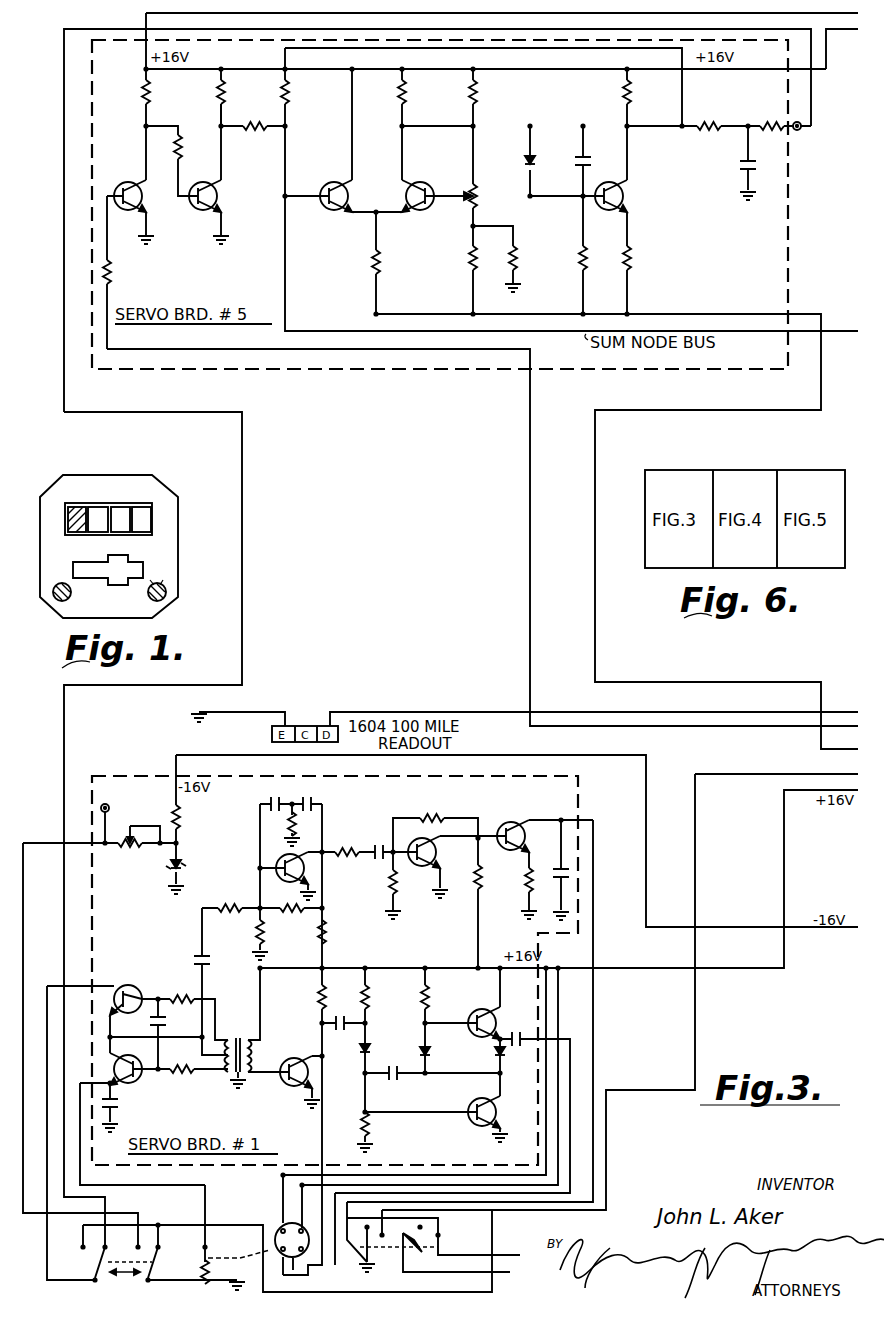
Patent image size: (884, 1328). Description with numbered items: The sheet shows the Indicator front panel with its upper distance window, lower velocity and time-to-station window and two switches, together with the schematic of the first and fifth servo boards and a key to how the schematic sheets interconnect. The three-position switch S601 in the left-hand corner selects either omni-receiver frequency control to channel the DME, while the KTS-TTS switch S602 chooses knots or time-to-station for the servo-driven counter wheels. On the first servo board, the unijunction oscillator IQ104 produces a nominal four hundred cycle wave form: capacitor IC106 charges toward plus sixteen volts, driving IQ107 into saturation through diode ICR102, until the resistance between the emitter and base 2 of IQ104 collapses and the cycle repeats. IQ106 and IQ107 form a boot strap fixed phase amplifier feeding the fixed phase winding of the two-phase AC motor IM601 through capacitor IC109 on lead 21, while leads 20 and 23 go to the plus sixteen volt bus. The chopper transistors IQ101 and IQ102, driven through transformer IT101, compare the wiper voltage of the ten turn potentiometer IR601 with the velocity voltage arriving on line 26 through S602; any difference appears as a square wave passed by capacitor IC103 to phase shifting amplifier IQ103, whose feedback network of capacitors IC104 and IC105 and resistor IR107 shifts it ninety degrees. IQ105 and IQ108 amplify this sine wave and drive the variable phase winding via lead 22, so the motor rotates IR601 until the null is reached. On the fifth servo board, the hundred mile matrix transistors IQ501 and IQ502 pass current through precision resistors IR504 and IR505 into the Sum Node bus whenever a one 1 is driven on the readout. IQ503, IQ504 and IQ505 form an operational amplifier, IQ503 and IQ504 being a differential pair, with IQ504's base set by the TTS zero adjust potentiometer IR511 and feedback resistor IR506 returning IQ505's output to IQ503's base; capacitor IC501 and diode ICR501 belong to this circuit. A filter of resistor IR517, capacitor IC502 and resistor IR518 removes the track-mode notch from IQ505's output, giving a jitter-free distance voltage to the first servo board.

In FIG. 3, the transistor IQ501 is at (118, 183).
In FIG. 3, the transistor IQ502 is at (220, 184).
In FIG. 3, the transistor IQ503 is at (331, 191).
In FIG. 3, the transistor IQ504 is at (452, 191).
In FIG. 3, the transistor IQ505 is at (622, 204).
In FIG. 3, the resistor IR504 is at (245, 97).
In FIG. 3, the resistor IR505 is at (253, 142).
In FIG. 3, the resistor IR506 is at (285, 98).
In FIG. 3, the TTS zero adjust potentiometer IR511 is at (480, 205).
In FIG. 3, the resistor IR517 is at (714, 122).
In FIG. 3, the resistor IR518 is at (772, 124).
In FIG. 3, the capacitor IC501 is at (589, 148).
In FIG. 3, the capacitor IC502 is at (742, 172).
In FIG. 3, the diode ICR501 is at (524, 162).
In FIG. 3, the chopper transistor IQ101 is at (116, 988).
In FIG. 3, the chopper transistor IQ102 is at (154, 1092).
In FIG. 3, the phase shifting amplifier IQ103 is at (308, 880).
In FIG. 3, the unijunction oscillator IQ104 is at (296, 1073).
In FIG. 3, the transistor IQ105 is at (413, 836).
In FIG. 3, the transistor IQ106 is at (484, 1012).
In FIG. 3, the transistor IQ107 is at (474, 1104).
In FIG. 3, the transistor IQ108 is at (533, 883).
In FIG. 3, the capacitor IC103 is at (206, 964).
In FIG. 3, the capacitor IC104 is at (268, 803).
In FIG. 3, the capacitor IC105 is at (312, 804).
In FIG. 3, the capacitor IC106 is at (352, 1020).
In FIG. 3, the capacitor IC109 is at (516, 1032).
In FIG. 3, the diode ICR102 is at (390, 1056).
In FIG. 3, the resistor IR107 is at (298, 824).
In FIG. 3, the transformer IT101 is at (244, 1032).
In FIG. 3, the two-phase AC motor IM601 is at (312, 1280).
In FIG. 3, the ten turn precision potentiometer IR601 is at (235, 1234).
In FIG. 3, the 3-position switch S601 is at (383, 1266).
In FIG. 1, the 3-position switch S601 is at (53, 603).
In FIG. 3, the KTS-TTS switch S602 is at (122, 1250).
In FIG. 3, the lead 20 is at (378, 1184).
In FIG. 3, the lead 21 is at (410, 1192).
In FIG. 3, the lead 22 is at (593, 822).
In FIG. 3, the lead 23 is at (328, 1165).
In FIG. 3, the line 26 is at (808, 774).
In FIG. 3, the one 1 is at (302, 1092).
In FIG. 3, the base 2 is at (276, 1060).